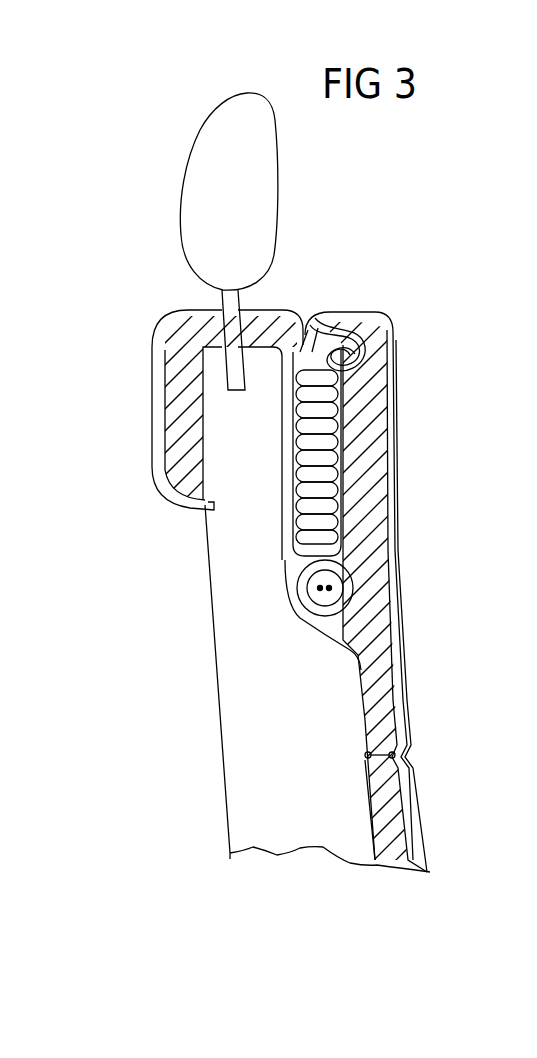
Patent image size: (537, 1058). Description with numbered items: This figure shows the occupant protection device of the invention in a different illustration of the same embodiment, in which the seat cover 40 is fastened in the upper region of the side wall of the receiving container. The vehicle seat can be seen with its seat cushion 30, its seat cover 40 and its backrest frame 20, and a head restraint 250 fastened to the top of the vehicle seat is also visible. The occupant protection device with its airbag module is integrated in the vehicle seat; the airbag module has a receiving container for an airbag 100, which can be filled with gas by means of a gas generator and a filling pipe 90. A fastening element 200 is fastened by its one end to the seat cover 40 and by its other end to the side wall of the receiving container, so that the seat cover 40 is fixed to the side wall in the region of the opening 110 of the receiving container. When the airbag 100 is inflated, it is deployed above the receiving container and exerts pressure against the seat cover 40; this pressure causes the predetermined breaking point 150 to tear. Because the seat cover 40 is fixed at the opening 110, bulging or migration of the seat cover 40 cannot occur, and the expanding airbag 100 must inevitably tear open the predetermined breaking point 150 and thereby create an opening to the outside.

The backrest frame 20 is at (290, 832).
The seat cushion 30 is at (367, 788).
The seat cover 40 is at (378, 659).
The filling pipe 90 is at (298, 593).
The airbag 100 is at (290, 399).
The opening 110 is at (313, 318).
The predetermined breaking point 150 is at (303, 297).
The fastening element 200 is at (372, 331).
The head restraint 250 is at (218, 152).